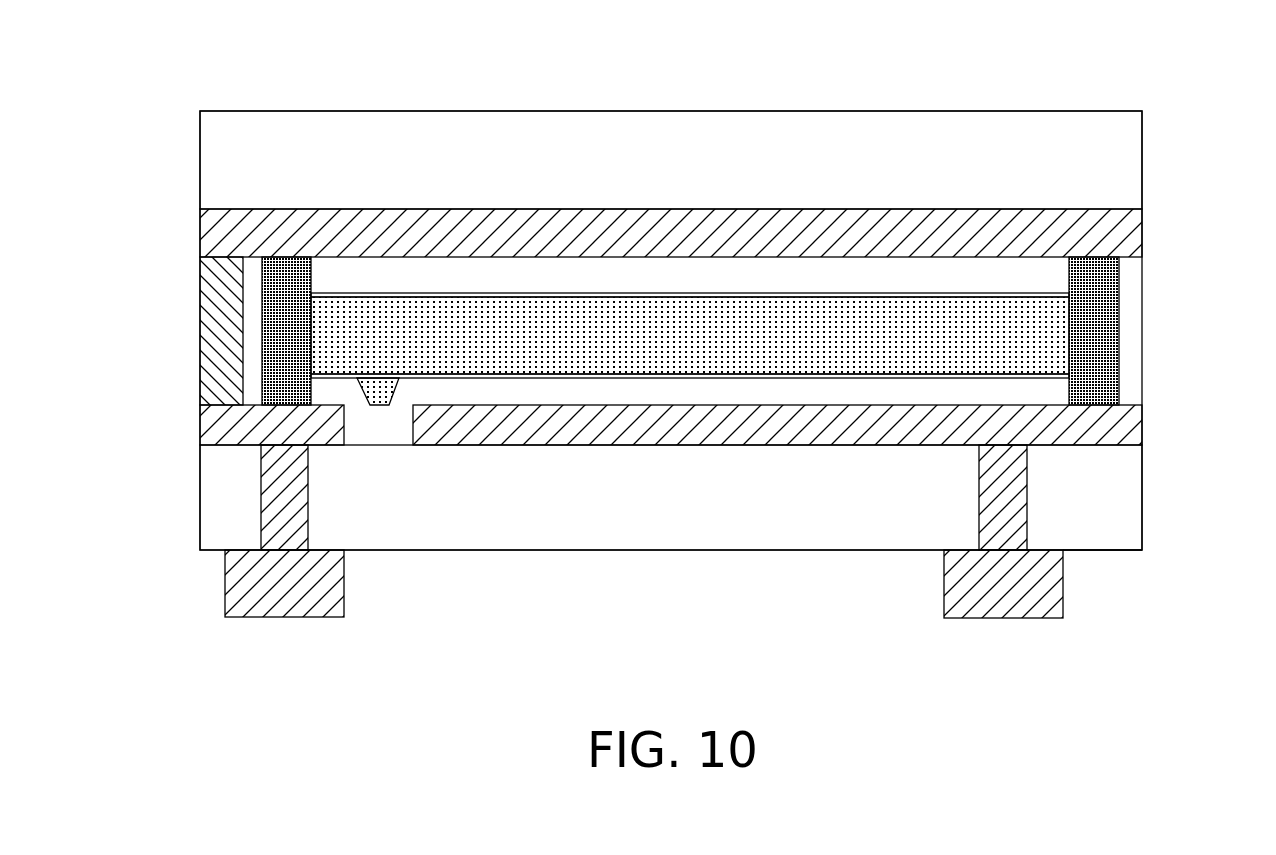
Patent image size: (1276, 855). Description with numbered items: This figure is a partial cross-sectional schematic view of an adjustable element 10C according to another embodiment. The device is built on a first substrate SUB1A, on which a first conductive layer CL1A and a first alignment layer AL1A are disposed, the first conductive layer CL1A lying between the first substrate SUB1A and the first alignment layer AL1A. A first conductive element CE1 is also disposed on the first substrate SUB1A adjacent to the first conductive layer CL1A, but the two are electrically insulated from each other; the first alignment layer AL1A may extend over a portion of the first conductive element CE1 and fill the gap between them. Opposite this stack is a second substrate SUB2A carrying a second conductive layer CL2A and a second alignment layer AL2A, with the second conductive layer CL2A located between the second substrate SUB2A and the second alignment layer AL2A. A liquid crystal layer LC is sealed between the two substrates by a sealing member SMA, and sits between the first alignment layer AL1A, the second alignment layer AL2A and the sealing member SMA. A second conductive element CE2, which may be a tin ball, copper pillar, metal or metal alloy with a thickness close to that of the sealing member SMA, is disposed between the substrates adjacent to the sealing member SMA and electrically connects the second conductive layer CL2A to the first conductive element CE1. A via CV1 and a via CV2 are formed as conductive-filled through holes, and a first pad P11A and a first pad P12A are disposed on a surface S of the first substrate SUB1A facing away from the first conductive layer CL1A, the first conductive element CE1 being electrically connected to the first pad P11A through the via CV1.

The adjustable element 10C is at (1097, 60).
The second substrate SUB2A is at (218, 175).
The second conductive layer CL2A is at (218, 240).
The second conductive element CE2 is at (218, 320).
The sealing member SMA is at (272, 355).
The second alignment layer AL2A is at (1058, 281).
The liquid crystal layer LC is at (1068, 337).
The first alignment layer AL1A is at (1052, 388).
The first conductive element CE1 is at (210, 425).
The first conductive layer CL1A is at (1123, 425).
The first substrate SUB1A is at (1117, 477).
The via CV1 is at (275, 510).
The via CV2 is at (1010, 497).
The first pad P11A is at (285, 603).
The first pad P12A is at (1005, 603).
The surface S is at (1100, 552).